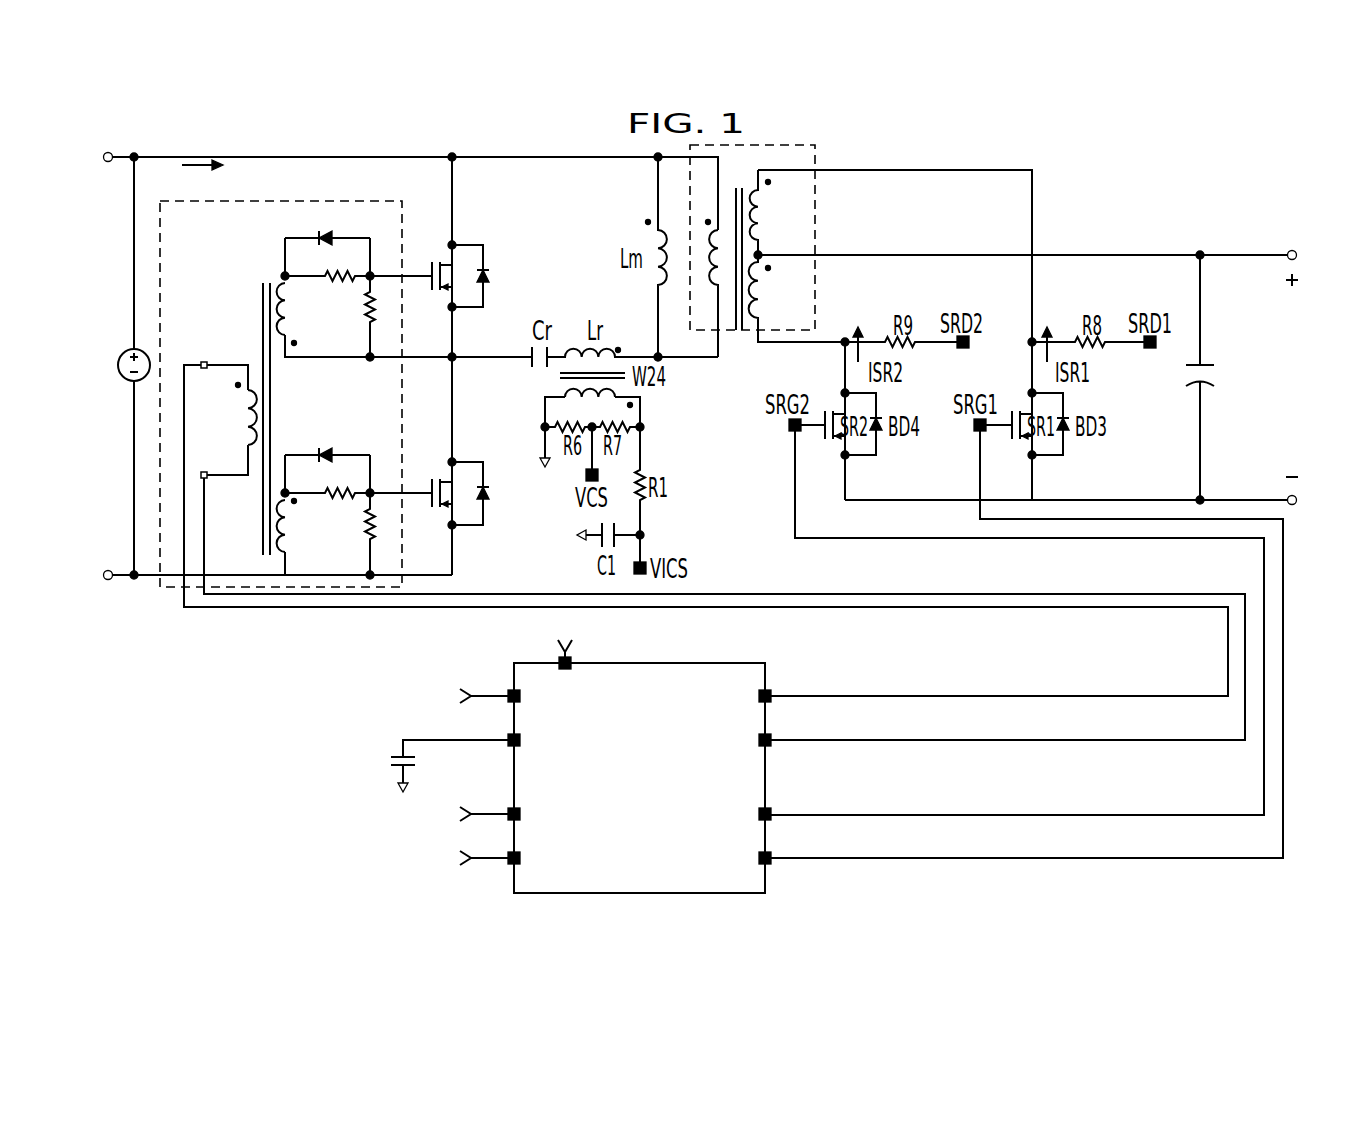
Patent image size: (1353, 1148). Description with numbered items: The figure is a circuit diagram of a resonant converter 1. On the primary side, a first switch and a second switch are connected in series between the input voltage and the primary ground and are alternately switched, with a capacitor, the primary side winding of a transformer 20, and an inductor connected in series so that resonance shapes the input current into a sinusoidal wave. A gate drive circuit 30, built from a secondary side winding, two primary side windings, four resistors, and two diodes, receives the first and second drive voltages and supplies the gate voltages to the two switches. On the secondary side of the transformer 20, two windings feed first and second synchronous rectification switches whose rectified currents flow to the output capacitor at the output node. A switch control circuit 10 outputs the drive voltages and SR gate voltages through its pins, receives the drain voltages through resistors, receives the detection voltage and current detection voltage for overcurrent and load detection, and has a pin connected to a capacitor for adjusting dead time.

The resonant converter 1 is at (1123, 158).
The switch control circuit 10 is at (765, 880).
The transformer 20 is at (818, 151).
The gate drive circuit 30 is at (291, 203).